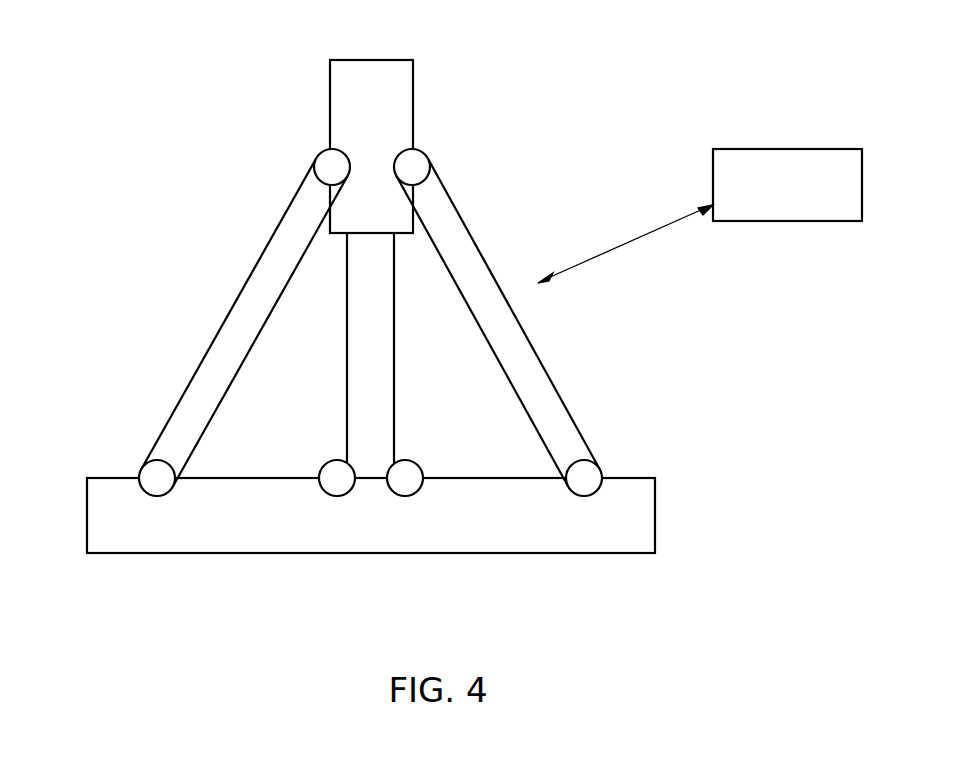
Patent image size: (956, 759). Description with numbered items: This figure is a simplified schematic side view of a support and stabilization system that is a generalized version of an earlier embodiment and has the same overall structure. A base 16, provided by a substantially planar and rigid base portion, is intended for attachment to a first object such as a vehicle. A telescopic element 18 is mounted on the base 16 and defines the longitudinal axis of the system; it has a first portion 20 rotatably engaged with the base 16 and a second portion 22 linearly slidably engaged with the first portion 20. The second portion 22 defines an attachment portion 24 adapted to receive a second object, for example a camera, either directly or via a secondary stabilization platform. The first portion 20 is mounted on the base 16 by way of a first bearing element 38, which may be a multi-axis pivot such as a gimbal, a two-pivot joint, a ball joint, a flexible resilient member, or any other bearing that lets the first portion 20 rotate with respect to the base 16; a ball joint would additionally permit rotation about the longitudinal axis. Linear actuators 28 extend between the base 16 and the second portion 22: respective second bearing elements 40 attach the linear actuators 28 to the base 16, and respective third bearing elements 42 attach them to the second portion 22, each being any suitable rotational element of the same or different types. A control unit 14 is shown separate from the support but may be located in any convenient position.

The control unit 14 is at (798, 160).
The base 16 is at (105, 525).
The telescopic element 18 is at (305, 98).
The first portion 20 is at (388, 365).
The second portion 22 is at (400, 122).
The attachment portion 24 is at (415, 64).
The linear actuators 28 is at (250, 287).
The first bearing element 38 is at (337, 485).
The second bearing elements 40 is at (150, 472).
The third bearing elements 42 is at (325, 165).